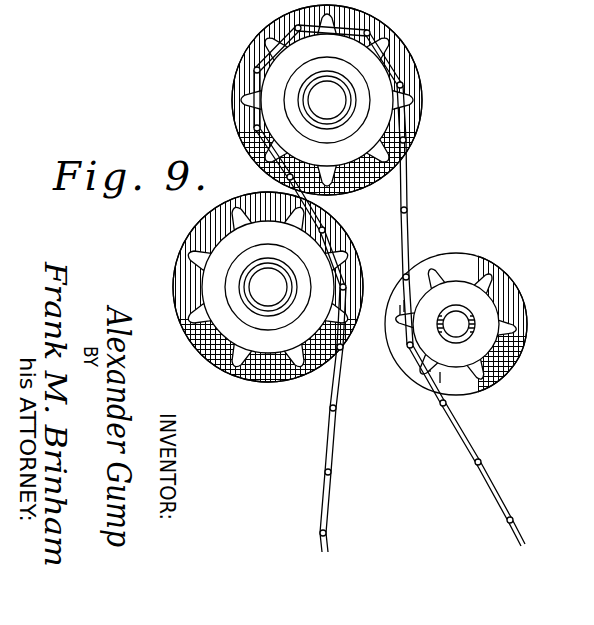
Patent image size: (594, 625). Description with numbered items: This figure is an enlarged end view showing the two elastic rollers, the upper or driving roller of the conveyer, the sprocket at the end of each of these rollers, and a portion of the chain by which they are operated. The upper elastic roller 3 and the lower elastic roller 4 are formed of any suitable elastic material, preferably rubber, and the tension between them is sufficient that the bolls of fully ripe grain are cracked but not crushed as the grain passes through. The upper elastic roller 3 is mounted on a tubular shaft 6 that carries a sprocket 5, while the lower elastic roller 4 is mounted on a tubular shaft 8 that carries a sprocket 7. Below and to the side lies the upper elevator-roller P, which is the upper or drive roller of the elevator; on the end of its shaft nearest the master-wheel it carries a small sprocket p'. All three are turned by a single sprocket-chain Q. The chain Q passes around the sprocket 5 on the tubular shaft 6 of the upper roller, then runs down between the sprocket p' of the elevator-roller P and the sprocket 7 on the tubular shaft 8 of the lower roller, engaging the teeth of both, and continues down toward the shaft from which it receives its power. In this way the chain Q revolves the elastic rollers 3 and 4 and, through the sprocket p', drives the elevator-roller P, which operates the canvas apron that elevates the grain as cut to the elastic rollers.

The upper elastic roller 3 is at (237, 110).
The lower elastic roller 4 is at (213, 347).
The sprocket 5 is at (272, 43).
The tubular shaft 6 is at (312, 121).
The sprocket 7 is at (193, 257).
The tubular shaft 8 is at (255, 308).
The upper elevator-roller P is at (473, 318).
The sprocket p' is at (505, 269).
The sprocket-chain Q is at (405, 225).